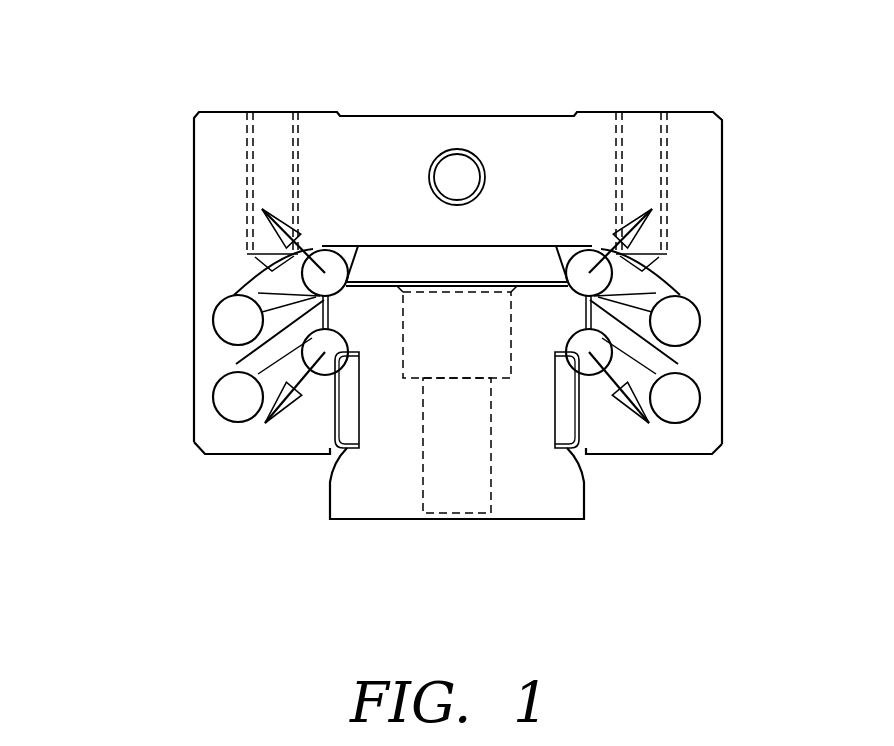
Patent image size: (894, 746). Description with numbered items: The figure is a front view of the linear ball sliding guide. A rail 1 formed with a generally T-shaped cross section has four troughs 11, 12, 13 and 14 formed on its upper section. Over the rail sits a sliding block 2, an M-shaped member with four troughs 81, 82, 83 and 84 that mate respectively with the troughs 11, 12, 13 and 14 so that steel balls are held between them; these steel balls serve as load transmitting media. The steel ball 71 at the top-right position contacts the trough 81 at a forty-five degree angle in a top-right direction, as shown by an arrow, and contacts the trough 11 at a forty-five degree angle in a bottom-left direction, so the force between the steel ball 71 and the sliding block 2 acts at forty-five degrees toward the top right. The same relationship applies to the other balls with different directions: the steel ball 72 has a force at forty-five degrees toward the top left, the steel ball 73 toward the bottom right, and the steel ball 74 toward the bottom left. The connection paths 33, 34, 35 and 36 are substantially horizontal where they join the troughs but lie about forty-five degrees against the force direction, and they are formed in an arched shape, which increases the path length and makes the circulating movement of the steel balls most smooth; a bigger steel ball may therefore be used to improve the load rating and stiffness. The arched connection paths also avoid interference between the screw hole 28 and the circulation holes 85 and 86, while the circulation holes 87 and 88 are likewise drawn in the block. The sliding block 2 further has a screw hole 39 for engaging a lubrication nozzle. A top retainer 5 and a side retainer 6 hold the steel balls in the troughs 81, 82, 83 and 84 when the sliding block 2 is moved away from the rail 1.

The rail 1 is at (568, 512).
The sliding block 2 is at (205, 158).
The top retainer 5 is at (410, 262).
The side retainer 6 is at (342, 453).
The trough 11 is at (566, 297).
The trough 12 is at (348, 297).
The trough 13 is at (577, 293).
The trough 14 is at (337, 293).
The screw hole 28 is at (272, 120).
The connection path 33 is at (662, 290).
The connection path 34 is at (268, 284).
The connection path 35 is at (660, 370).
The connection path 36 is at (248, 367).
The screw hole 39 is at (465, 167).
The steel ball 71 is at (600, 252).
The steel ball 72 is at (318, 250).
The steel ball 73 is at (605, 385).
The steel ball 74 is at (328, 448).
The trough 81 is at (657, 278).
The trough 82 is at (258, 292).
The trough 83 is at (685, 362).
The trough 84 is at (252, 362).
The circulation hole 85 is at (700, 325).
The circulation hole 86 is at (213, 322).
The return ball 87 is at (694, 416).
The return ball 88 is at (212, 404).